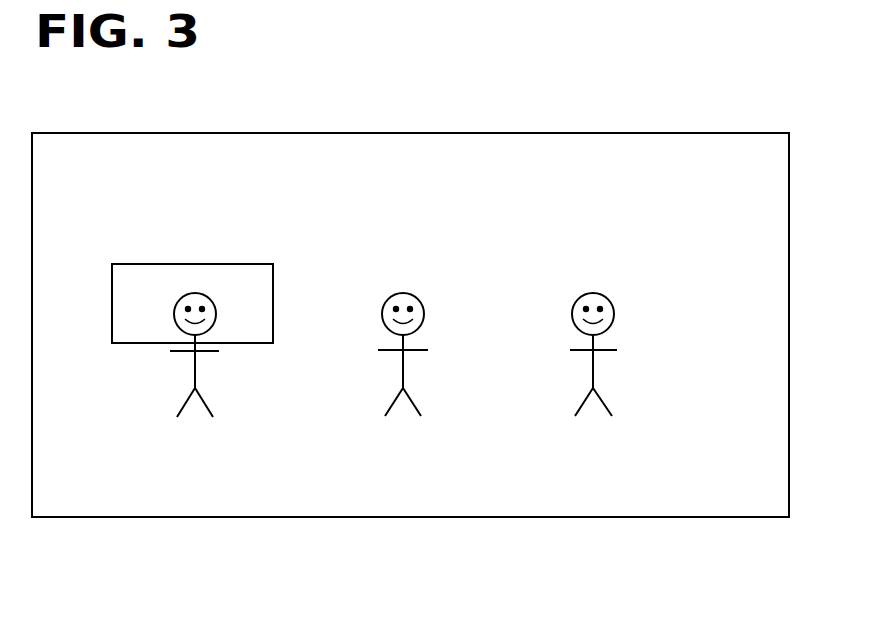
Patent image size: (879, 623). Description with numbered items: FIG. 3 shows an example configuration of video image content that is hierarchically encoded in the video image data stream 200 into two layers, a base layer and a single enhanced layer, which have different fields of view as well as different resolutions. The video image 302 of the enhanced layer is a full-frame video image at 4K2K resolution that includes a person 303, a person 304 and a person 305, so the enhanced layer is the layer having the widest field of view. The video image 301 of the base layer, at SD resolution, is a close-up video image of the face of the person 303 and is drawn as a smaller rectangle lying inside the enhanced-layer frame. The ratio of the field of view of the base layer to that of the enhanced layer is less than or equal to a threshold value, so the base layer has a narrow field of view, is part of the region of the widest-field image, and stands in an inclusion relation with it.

The video image data stream 200 is at (459, 95).
The video image of the base layer 301 is at (273, 283).
The video image of the enhanced layer 302 is at (770, 133).
The person 303 is at (203, 398).
The person 304 is at (411, 398).
The person 305 is at (601, 398).